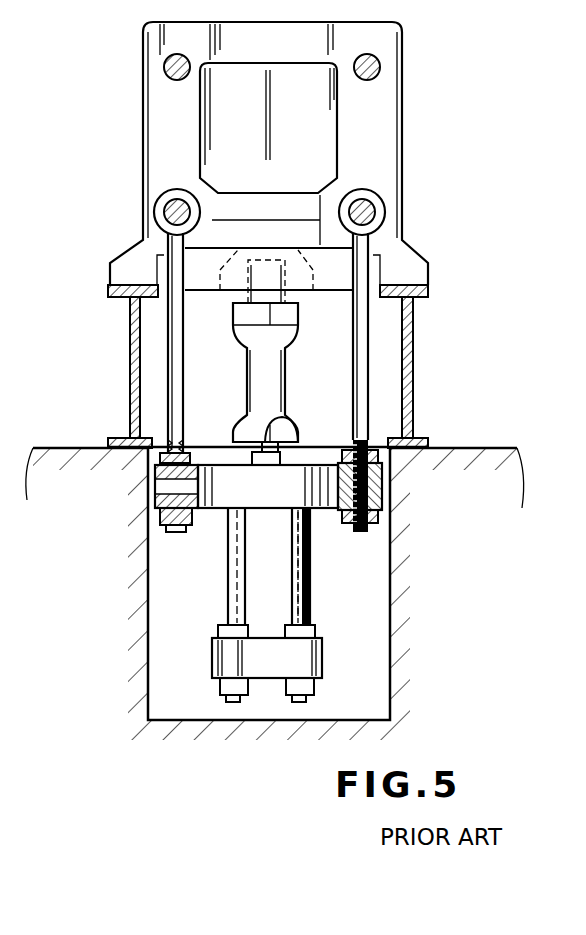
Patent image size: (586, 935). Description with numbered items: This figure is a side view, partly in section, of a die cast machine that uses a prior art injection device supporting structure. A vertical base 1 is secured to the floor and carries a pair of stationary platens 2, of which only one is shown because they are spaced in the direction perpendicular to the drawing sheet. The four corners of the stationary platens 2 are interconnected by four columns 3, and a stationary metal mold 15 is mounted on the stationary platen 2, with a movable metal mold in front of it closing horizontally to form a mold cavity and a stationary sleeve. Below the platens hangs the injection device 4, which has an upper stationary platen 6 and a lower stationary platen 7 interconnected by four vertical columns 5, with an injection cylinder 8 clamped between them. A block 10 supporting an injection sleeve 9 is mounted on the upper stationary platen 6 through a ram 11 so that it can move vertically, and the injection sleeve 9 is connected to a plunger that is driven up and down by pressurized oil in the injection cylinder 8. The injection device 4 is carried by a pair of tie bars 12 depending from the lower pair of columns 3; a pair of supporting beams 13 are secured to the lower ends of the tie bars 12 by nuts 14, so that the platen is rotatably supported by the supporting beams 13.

The vertical base 1 is at (130, 331).
The stationary platen 2 is at (402, 67).
The column 3 is at (164, 67).
The injection device 4 is at (304, 352).
The vertical column 5 is at (228, 594).
The upper stationary platen 6 is at (216, 512).
The lower stationary platen 7 is at (265, 680).
The injection cylinder 8 is at (300, 546).
The injection sleeve 9 is at (250, 273).
The block 10 is at (248, 386).
The ram 11 is at (284, 420).
The tie bar 12 is at (168, 380).
The supporting beam 13 is at (155, 508).
The nut 14 is at (150, 467).
The stationary metal mold 15 is at (200, 117).